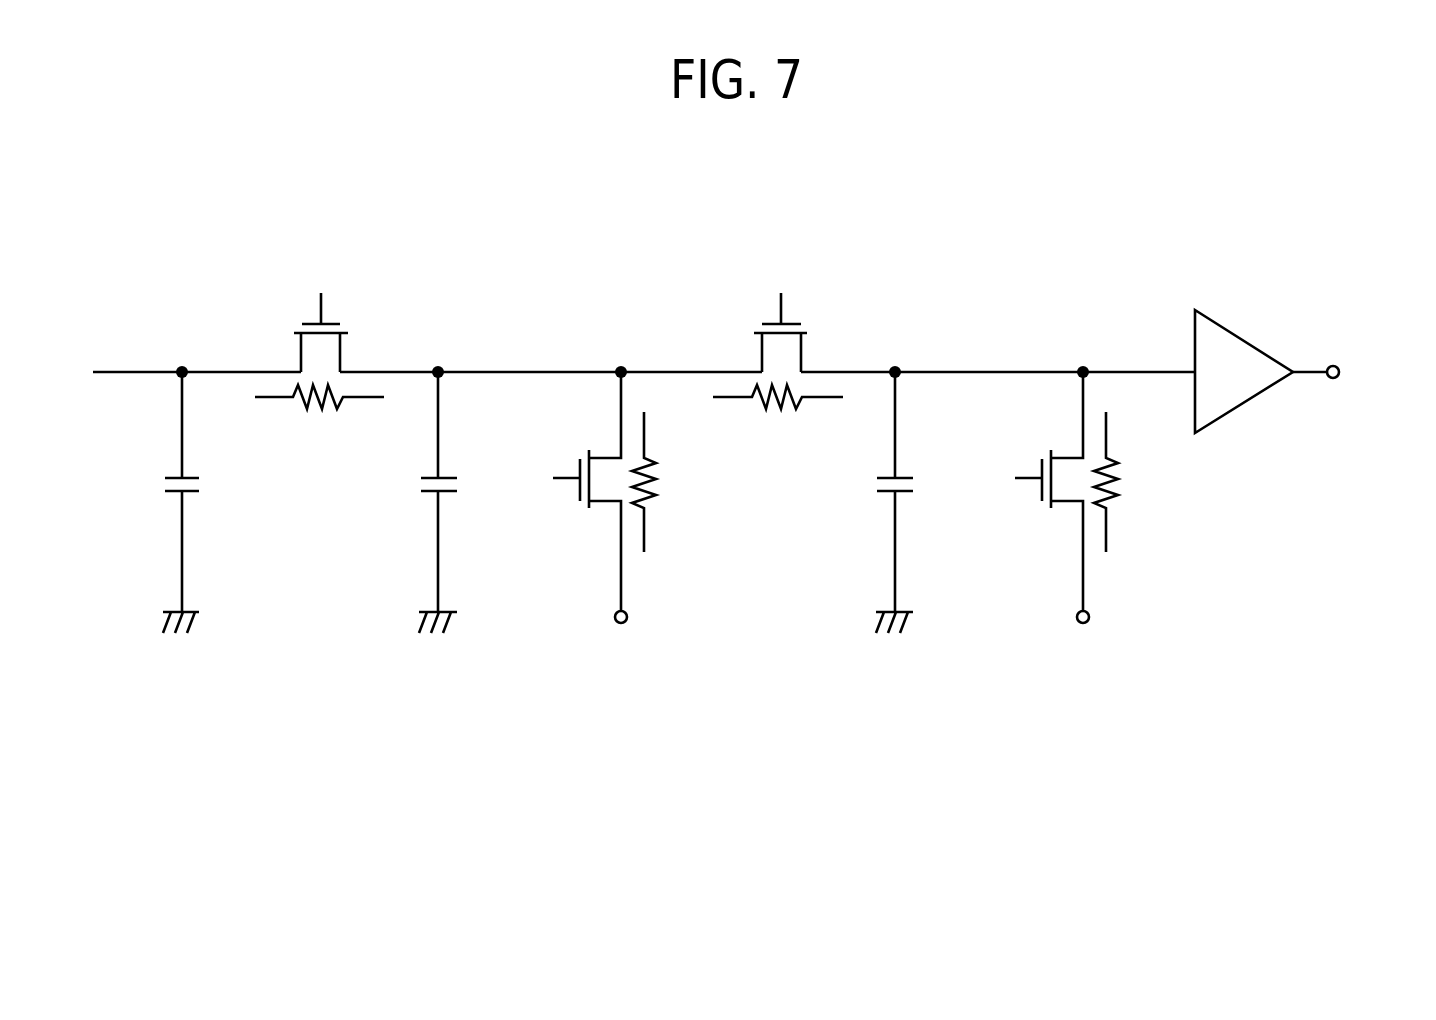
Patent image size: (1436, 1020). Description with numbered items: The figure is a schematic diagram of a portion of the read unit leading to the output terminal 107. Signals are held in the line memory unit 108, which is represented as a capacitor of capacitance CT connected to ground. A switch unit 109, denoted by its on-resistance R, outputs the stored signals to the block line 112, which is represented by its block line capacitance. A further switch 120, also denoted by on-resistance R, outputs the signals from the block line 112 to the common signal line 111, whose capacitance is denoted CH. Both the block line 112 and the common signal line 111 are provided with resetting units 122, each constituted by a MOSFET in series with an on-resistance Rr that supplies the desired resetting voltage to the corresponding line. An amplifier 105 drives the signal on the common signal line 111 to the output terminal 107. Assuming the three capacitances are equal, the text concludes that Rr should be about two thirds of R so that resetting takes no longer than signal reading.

The amplifier 105 is at (1233, 330).
The output terminal 107 is at (1339, 372).
The line memory unit 108 is at (170, 493).
The switch unit 109 is at (327, 322).
The common signal line 111 is at (885, 493).
The block line 112 is at (428, 493).
The switch 120 is at (794, 322).
The resetting unit 122 is at (600, 503).